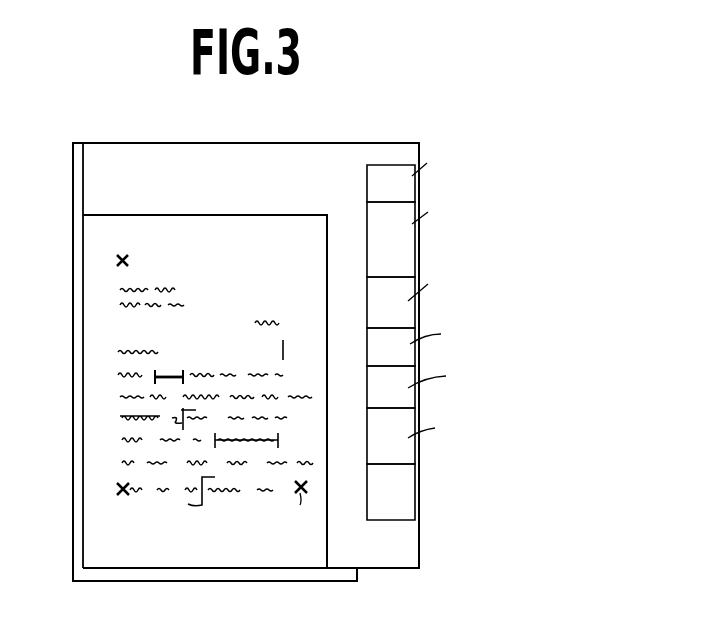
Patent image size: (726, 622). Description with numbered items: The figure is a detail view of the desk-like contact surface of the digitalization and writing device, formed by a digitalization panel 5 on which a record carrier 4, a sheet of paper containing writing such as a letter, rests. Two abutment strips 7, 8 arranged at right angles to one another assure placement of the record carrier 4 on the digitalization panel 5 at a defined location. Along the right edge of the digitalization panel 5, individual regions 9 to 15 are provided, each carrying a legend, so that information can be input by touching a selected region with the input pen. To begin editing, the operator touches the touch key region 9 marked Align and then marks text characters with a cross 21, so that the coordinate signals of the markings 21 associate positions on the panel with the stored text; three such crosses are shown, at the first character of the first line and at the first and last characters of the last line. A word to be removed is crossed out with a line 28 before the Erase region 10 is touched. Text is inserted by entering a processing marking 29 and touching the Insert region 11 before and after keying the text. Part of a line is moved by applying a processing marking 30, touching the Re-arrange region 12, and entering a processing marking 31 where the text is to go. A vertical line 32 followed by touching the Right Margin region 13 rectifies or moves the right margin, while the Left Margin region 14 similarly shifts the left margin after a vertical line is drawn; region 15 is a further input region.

The record carrier 4 is at (228, 222).
The digitalization panel 5 is at (327, 151).
The abutment strip 7 is at (335, 581).
The abutment strip 8 is at (80, 176).
The touch key region 9 is at (411, 201).
The touch key region 10 is at (411, 276).
The touch key region 11 is at (411, 328).
The touch key region 12 is at (411, 366).
The touch key region 13 is at (411, 408).
The touch key region 14 is at (411, 464).
The individual region 15 is at (411, 520).
The cross 21 is at (118, 261).
The line 28 is at (172, 371).
The processing marking 29 is at (181, 417).
The processing marking 30 is at (279, 440).
The processing marking 31 is at (195, 505).
The vertical line 32 is at (284, 346).